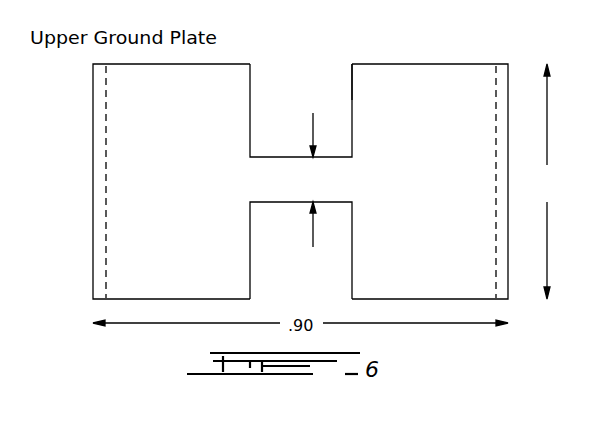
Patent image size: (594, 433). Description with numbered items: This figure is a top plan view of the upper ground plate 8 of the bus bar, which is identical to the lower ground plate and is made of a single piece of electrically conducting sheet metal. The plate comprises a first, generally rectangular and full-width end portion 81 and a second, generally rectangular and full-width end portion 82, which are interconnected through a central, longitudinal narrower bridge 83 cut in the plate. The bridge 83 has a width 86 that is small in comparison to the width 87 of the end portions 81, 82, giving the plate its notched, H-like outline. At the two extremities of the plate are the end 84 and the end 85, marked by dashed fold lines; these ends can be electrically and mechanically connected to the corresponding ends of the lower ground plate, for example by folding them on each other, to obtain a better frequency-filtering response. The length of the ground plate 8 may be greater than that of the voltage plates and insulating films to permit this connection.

The upper ground plate 8 is at (342, 105).
The first end portion 81 is at (233, 90).
The second end portion 82 is at (367, 263).
The bridge 83 is at (283, 157).
The end 84 is at (100, 182).
The end 85 is at (503, 72).
The width of bridge 86 is at (310, 180).
The width of end portions 87 is at (547, 181).